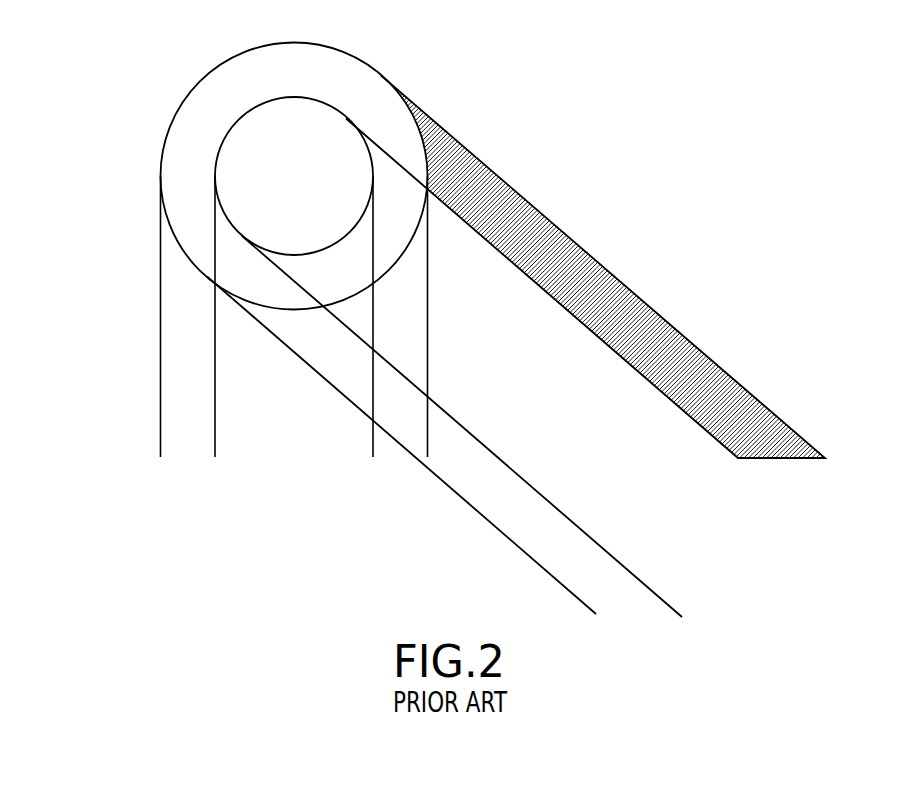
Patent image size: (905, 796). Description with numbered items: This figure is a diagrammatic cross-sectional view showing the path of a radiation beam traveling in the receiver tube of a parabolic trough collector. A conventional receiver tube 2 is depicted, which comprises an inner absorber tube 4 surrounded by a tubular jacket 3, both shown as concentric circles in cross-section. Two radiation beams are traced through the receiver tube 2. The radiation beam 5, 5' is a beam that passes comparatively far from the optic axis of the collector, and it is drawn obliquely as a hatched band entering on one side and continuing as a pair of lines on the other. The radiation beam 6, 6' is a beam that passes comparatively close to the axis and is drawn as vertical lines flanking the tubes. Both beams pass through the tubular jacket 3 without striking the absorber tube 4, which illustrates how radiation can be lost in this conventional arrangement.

The receiver tube 2 is at (143, 122).
The tubular jacket 3 is at (383, 76).
The absorber tube 4 is at (265, 100).
The radiation beam 5 is at (585, 265).
The radiation beam 5' is at (444, 426).
The radiation beam 6 is at (444, 316).
The radiation beam 6' is at (149, 316).